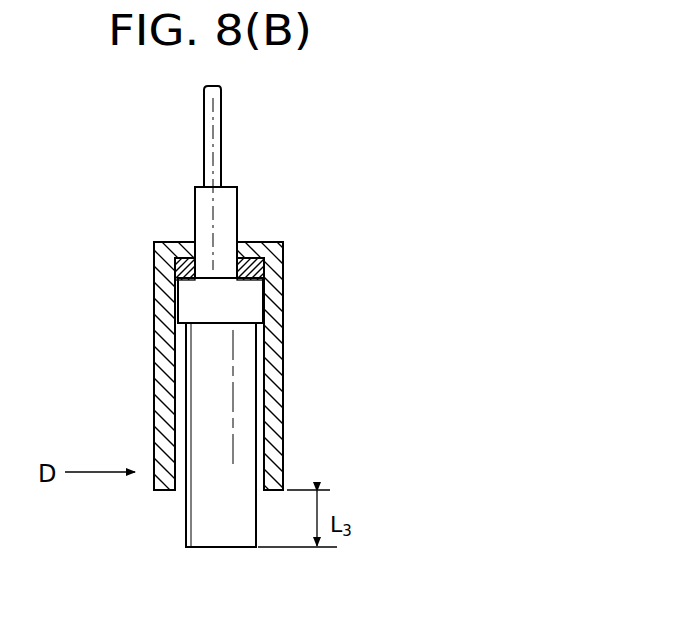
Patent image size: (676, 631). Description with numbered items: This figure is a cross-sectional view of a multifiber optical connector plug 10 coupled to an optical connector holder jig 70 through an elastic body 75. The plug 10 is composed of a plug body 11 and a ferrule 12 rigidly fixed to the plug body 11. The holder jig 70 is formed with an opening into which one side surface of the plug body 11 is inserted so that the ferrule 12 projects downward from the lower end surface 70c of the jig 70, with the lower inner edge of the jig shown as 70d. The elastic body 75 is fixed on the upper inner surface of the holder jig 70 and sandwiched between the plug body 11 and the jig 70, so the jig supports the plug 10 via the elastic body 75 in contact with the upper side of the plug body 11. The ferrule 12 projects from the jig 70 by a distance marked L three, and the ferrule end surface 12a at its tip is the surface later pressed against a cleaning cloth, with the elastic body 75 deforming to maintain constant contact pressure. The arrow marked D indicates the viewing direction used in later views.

The optical connector holder jig 70 is at (144, 239).
The lower end surface 70c is at (163, 494).
The inner lower edge of sleeve 70d is at (181, 494).
The elastic body 75 is at (268, 268).
The multifiber optical connector plug 10 is at (258, 219).
The plug body 11 is at (248, 310).
The ferrule 12 is at (243, 530).
The ferrule end surface 12a is at (213, 550).